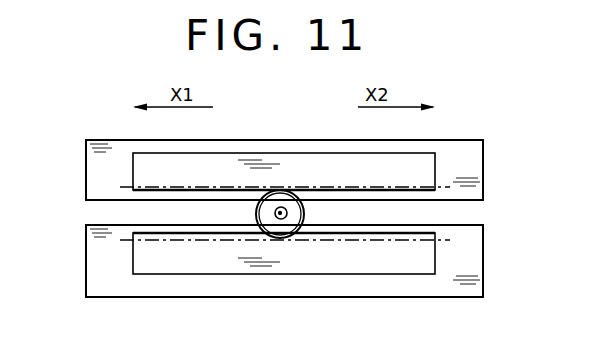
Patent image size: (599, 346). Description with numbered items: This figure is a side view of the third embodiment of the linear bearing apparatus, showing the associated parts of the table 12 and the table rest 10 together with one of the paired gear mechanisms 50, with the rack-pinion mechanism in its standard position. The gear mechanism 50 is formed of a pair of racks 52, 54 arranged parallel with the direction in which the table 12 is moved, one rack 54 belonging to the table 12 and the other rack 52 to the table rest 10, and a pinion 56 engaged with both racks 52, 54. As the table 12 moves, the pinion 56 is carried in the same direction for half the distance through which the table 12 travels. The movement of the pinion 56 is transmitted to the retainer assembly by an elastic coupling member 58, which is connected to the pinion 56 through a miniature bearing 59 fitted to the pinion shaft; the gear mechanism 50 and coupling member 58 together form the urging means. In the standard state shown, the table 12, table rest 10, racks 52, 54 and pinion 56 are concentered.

The table rest 10 is at (475, 262).
The table 12 is at (460, 151).
The gear mechanism 50 is at (450, 215).
The rack 52 is at (402, 258).
The rack 54 is at (415, 166).
The pinion 56 is at (284, 206).
The elastic coupling member 58 is at (283, 220).
The miniature bearing 59 is at (276, 237).